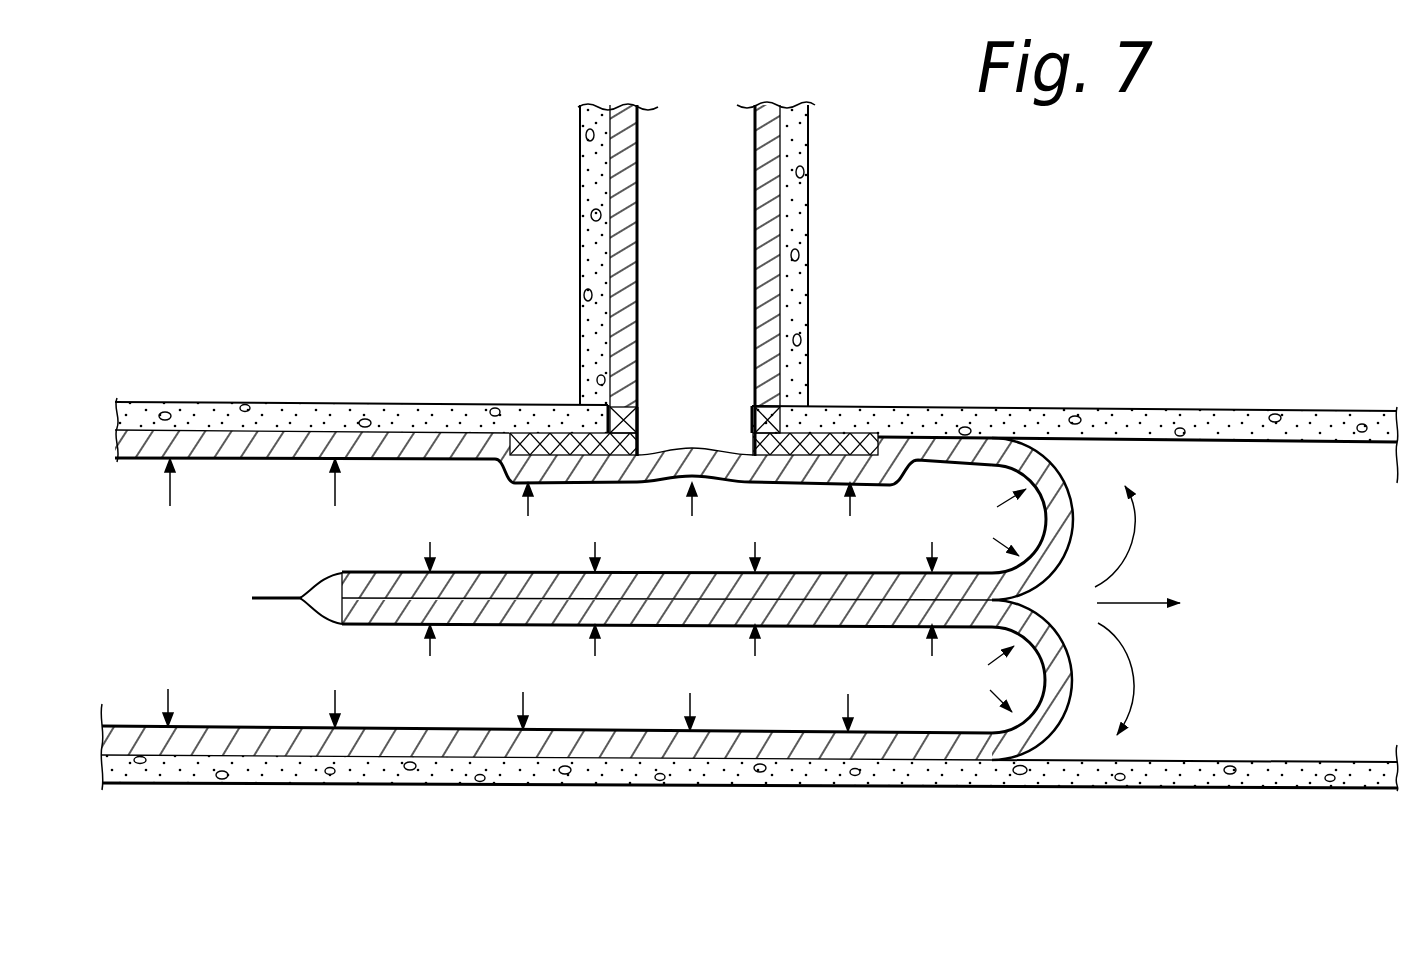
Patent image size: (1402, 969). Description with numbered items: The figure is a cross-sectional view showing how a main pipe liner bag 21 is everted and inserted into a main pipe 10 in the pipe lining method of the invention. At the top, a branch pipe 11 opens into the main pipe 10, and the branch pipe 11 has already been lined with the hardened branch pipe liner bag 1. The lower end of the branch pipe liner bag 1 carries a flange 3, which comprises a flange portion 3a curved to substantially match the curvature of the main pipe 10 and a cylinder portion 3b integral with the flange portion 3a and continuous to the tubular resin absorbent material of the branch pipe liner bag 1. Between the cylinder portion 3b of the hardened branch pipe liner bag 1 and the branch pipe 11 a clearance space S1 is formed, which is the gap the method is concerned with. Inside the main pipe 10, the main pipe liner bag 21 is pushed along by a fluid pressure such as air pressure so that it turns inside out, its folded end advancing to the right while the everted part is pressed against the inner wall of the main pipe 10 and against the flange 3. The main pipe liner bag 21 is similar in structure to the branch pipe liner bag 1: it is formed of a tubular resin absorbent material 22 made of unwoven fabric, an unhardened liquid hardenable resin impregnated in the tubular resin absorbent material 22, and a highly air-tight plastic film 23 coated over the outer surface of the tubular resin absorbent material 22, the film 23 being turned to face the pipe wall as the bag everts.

The branch pipe liner bag 1 is at (728, 279).
The main pipe 10 is at (1003, 783).
The branch pipe 11 is at (808, 207).
The flange 3 is at (711, 369).
The flange portion 3a is at (854, 442).
The cylinder portion 3b is at (782, 404).
The clearance space S1 is at (641, 421).
The main pipe liner bag 21 is at (605, 595).
The tubular resin absorbent material 22 is at (960, 448).
The plastic film 23 is at (880, 485).